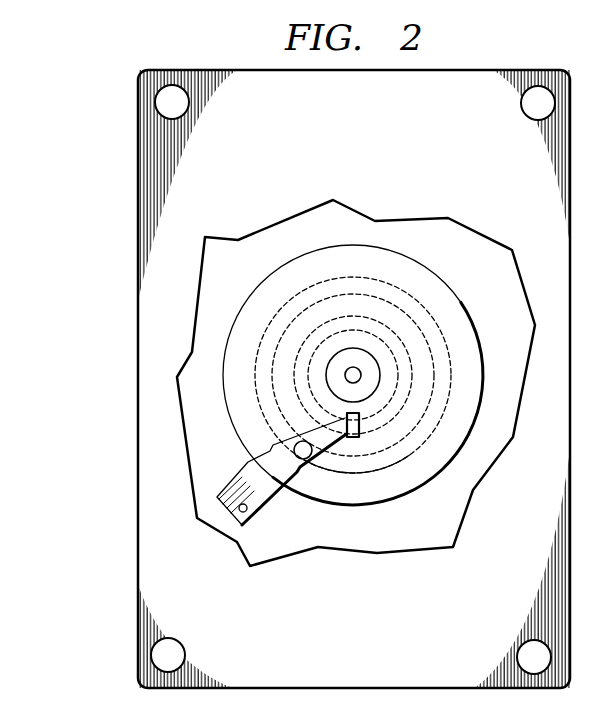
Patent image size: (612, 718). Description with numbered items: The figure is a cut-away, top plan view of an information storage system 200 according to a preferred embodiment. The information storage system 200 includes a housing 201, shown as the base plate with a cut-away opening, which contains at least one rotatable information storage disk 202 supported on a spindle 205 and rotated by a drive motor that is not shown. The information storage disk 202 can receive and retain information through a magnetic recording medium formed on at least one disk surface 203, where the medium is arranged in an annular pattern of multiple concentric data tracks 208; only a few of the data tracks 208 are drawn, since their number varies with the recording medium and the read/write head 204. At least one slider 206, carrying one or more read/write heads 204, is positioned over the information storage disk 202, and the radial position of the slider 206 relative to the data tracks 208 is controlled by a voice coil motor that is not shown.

The information storage system 200 is at (92, 125).
The base housing 201 is at (142, 343).
The information storage disk 202 is at (462, 298).
The disk surface 203 is at (407, 493).
The read/write head 204 is at (360, 418).
The spindle 205 is at (353, 370).
The slider 206 is at (253, 505).
The data tracks 208 is at (231, 290).